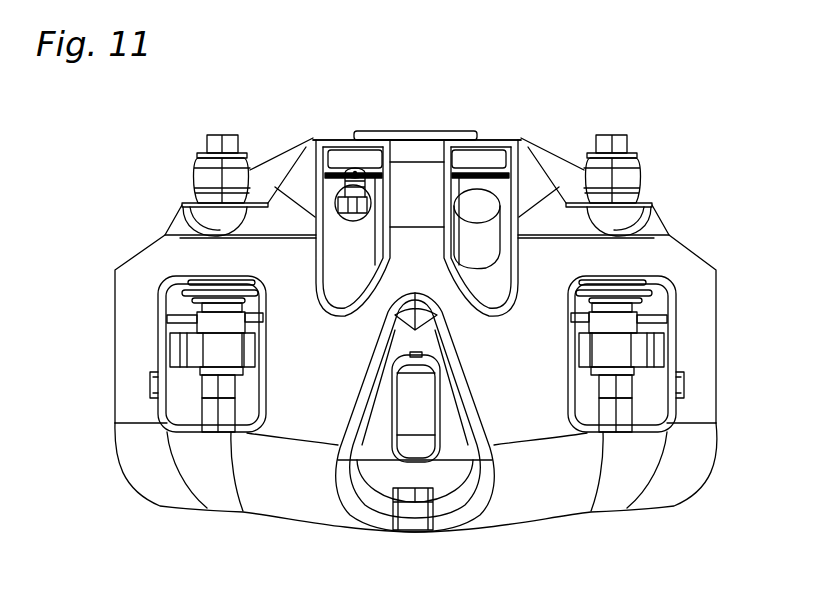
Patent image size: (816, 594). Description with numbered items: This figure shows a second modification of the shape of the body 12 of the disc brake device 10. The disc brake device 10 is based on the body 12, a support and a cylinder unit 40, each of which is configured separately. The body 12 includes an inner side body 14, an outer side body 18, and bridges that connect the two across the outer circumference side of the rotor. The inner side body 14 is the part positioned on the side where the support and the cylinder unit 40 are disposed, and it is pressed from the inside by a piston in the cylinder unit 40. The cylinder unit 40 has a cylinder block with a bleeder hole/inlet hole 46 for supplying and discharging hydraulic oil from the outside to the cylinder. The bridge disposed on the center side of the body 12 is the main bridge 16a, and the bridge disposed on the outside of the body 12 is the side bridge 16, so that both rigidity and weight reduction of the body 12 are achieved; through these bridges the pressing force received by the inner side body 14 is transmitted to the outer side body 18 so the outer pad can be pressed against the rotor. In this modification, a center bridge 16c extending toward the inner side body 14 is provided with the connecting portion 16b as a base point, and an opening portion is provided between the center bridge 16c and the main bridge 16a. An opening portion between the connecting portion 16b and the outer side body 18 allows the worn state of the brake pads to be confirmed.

The disc brake device 10 is at (416, 330).
The body 12 is at (439, 356).
The inner side body 14 is at (322, 130).
The side bridge 16 is at (137, 342).
The main bridge 16a is at (287, 295).
The connecting portion 16b is at (414, 263).
The center bridge 16c is at (423, 178).
The outer side body 18 is at (499, 533).
The cylinder unit 40 is at (492, 180).
The bleeder hole/inlet hole 46 is at (350, 230).